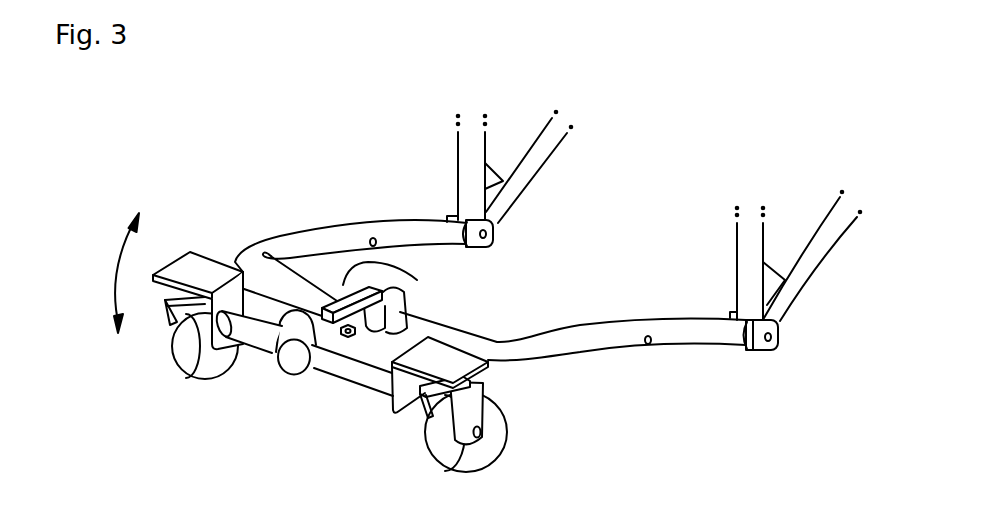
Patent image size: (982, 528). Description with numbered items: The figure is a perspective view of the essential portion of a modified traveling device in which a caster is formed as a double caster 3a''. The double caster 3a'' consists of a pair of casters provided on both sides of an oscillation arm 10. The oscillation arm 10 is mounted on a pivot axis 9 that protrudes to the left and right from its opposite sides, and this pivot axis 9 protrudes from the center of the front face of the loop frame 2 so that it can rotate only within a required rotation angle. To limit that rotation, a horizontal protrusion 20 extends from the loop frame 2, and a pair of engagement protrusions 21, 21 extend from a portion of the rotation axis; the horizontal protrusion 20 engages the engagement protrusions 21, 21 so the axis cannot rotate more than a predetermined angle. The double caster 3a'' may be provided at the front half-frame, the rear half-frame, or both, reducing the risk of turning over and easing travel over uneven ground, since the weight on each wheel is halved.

The loop frame 2 is at (331, 237).
The horizontal protrusion 20 is at (417, 280).
The engagement protrusion 21 is at (414, 317).
The pivot axis 9 is at (302, 374).
The oscillation arm 10 is at (363, 370).
The double caster 3a'' is at (316, 377).